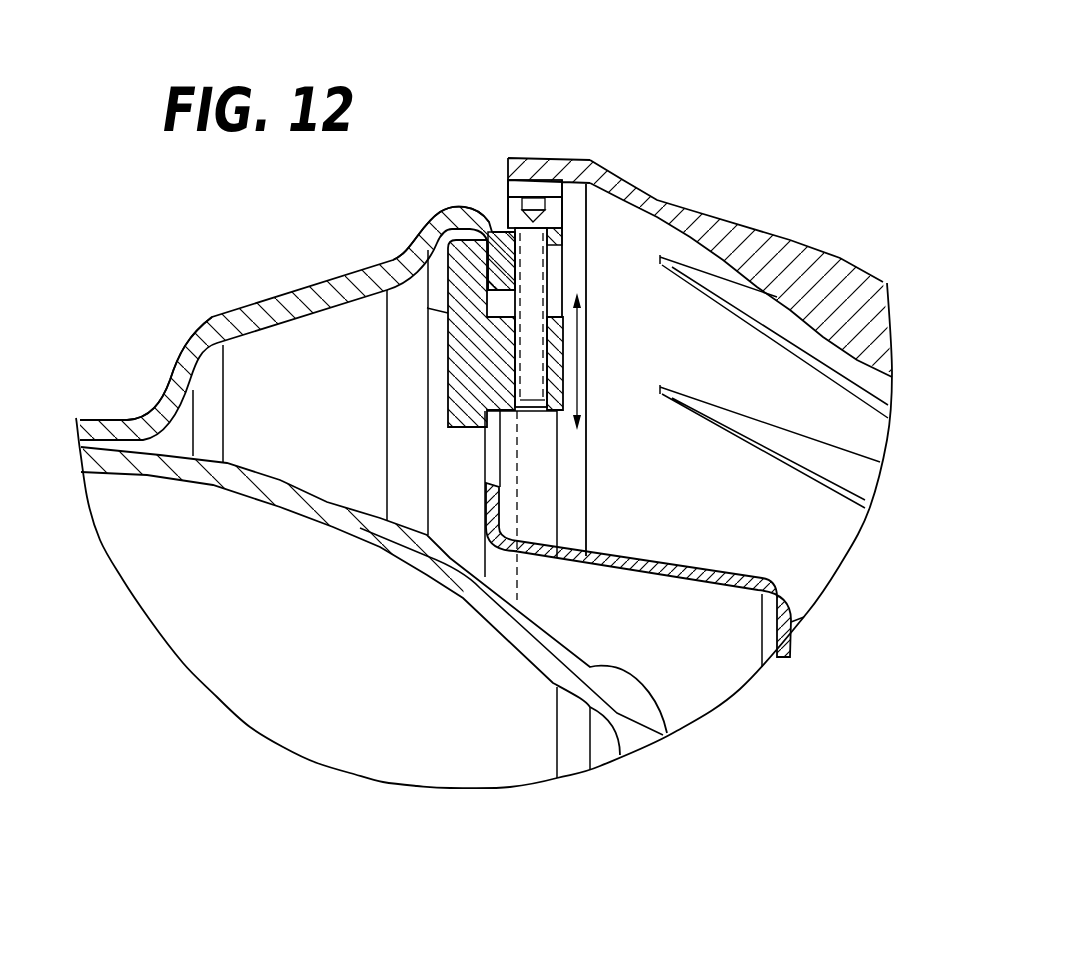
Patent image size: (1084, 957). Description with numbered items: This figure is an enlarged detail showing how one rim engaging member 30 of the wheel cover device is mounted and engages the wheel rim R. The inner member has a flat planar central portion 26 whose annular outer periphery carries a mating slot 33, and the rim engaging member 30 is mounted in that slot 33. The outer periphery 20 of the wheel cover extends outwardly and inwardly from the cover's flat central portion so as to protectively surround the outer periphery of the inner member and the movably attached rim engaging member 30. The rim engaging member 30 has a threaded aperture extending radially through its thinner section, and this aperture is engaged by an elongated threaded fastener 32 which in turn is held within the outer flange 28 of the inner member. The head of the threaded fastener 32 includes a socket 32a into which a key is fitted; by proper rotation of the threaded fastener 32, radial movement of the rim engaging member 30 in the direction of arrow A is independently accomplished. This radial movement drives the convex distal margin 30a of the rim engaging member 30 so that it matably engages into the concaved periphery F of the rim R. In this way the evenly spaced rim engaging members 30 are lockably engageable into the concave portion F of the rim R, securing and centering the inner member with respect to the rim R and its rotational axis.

The outer periphery 20 is at (730, 212).
The planar central portion 26 is at (647, 557).
The outer flange 28 is at (497, 227).
The rim engaging member 30 is at (373, 267).
The convex distal margin 30a is at (468, 237).
The threaded fastener 32 is at (553, 273).
The socket 32a is at (533, 205).
The mating slot 33 is at (490, 460).
The arrow A is at (590, 361).
The concave periphery F is at (433, 203).
The rim R is at (222, 305).